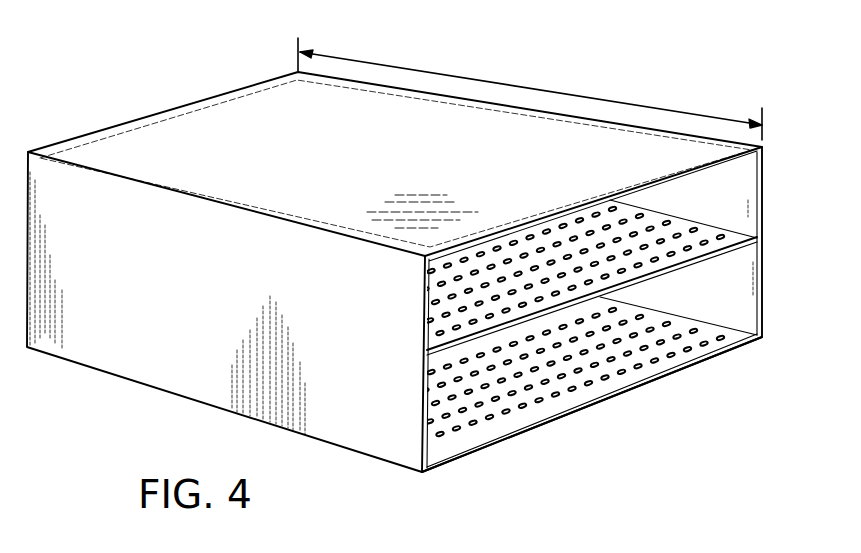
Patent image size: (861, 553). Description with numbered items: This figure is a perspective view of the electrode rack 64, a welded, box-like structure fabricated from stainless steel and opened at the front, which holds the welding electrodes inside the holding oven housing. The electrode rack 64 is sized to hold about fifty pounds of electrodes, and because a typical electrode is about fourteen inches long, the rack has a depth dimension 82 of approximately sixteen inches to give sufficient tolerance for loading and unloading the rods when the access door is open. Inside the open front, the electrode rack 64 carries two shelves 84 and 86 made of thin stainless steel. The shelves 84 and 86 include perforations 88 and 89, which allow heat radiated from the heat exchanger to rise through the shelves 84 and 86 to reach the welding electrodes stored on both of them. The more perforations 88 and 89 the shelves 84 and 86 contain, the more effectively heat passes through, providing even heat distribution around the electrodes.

The electrode rack 64 is at (113, 58).
The depth dimension 82 is at (502, 84).
The shelf 84 is at (564, 277).
The shelf 86 is at (733, 350).
The perforations 88 is at (533, 408).
The perforations 89 is at (430, 323).